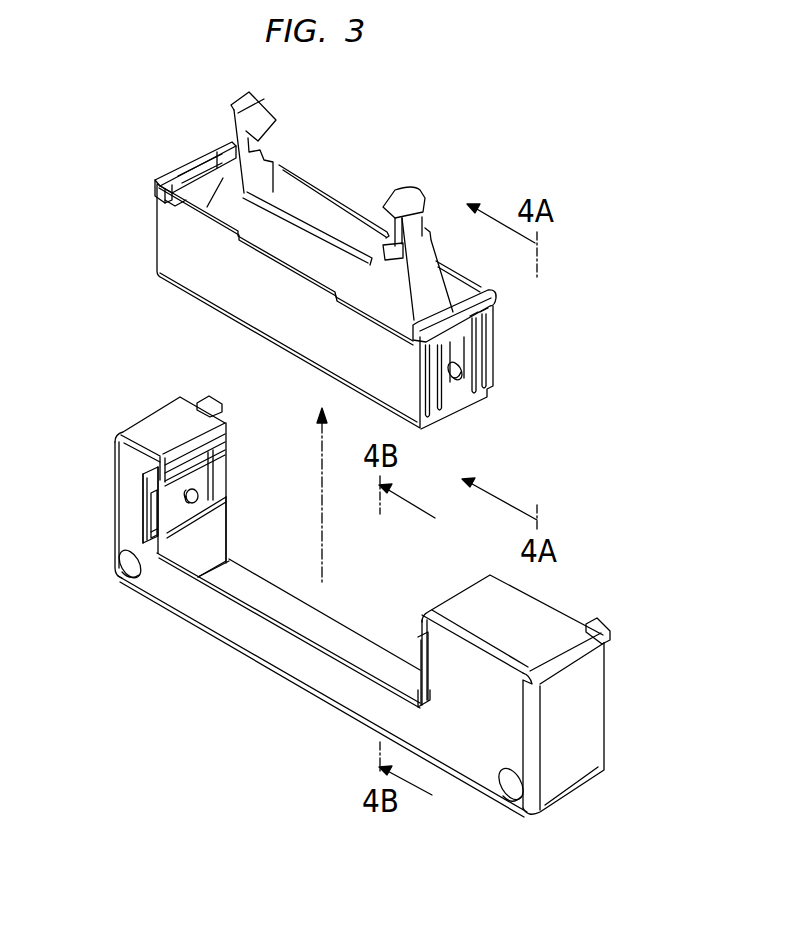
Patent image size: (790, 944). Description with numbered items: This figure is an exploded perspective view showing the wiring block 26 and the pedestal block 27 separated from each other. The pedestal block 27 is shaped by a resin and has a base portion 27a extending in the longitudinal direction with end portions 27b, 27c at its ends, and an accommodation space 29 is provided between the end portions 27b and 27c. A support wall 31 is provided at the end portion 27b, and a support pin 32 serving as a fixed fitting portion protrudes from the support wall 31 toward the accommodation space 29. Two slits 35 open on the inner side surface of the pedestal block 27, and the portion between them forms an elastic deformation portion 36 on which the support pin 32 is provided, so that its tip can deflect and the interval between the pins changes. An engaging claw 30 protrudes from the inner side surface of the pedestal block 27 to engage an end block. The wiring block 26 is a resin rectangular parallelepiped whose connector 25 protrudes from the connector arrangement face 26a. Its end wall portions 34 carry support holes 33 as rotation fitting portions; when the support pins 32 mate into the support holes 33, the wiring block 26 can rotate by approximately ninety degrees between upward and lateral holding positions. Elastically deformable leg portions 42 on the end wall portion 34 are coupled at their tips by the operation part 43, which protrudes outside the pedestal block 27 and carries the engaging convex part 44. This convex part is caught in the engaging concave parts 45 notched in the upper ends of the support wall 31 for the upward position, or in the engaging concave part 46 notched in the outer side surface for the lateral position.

The connector 25 is at (340, 222).
The wiring block 26 is at (172, 260).
The connector arrangement face 26a is at (192, 197).
The pedestal block 27 is at (243, 637).
The base portion 27a is at (305, 672).
The end portion 27b is at (123, 463).
The end portion 27c is at (588, 702).
The accommodation space 29 is at (341, 501).
The engaging claw 30 is at (206, 400).
The support wall 31 is at (198, 549).
The support pin 32 is at (199, 497).
The support hole 33 is at (458, 380).
The end wall portion 34 is at (458, 393).
The slit 35 is at (198, 479).
The elastic deformation portion 36 is at (170, 497).
The leg portion 42 is at (433, 398).
The operation part 43 is at (203, 160).
The engaging convex part 44 is at (473, 323).
The engaging concave part 45 is at (205, 432).
The engaging concave part 46 is at (150, 528).